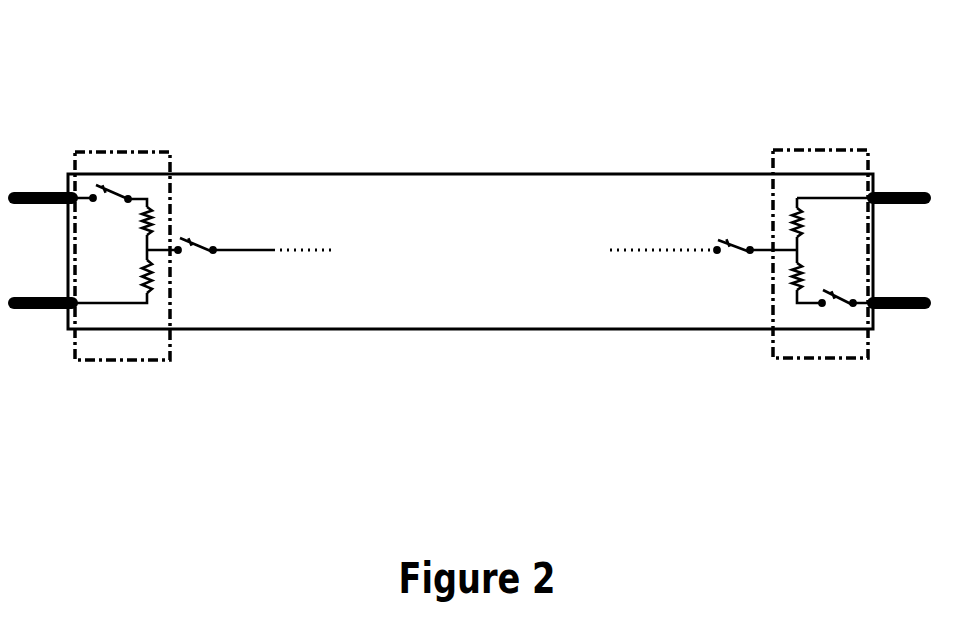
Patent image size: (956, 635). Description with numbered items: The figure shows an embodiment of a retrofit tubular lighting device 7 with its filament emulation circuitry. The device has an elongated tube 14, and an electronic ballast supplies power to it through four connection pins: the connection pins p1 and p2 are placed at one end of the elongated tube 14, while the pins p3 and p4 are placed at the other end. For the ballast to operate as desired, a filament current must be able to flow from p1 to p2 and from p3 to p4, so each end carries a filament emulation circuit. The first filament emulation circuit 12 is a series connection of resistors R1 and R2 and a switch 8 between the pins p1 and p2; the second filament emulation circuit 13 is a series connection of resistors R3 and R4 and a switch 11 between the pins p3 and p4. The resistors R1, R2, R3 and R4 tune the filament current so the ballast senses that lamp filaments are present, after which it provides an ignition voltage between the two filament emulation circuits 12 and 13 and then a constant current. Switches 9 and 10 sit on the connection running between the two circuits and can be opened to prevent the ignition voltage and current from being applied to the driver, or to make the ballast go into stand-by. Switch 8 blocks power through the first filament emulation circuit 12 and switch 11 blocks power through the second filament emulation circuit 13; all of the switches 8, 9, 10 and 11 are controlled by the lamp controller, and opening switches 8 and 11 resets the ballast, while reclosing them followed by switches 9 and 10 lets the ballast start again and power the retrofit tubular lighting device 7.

The retrofit tubular lighting device 7 is at (420, 49).
The elongated tube 14 is at (497, 172).
The first filament emulation circuit 12 is at (122, 242).
The second filament emulation circuit 13 is at (820, 238).
The connection pin p1 is at (43, 180).
The connection pin p2 is at (43, 285).
The connection pin p3 is at (899, 180).
The connection pin p4 is at (899, 285).
The switch 8 is at (110, 209).
The switch 9 is at (195, 262).
The switch 10 is at (733, 263).
The switch 11 is at (839, 283).
The resistor R1 is at (154, 216).
The resistor R2 is at (156, 278).
The resistor R3 is at (791, 220).
The resistor R4 is at (789, 280).